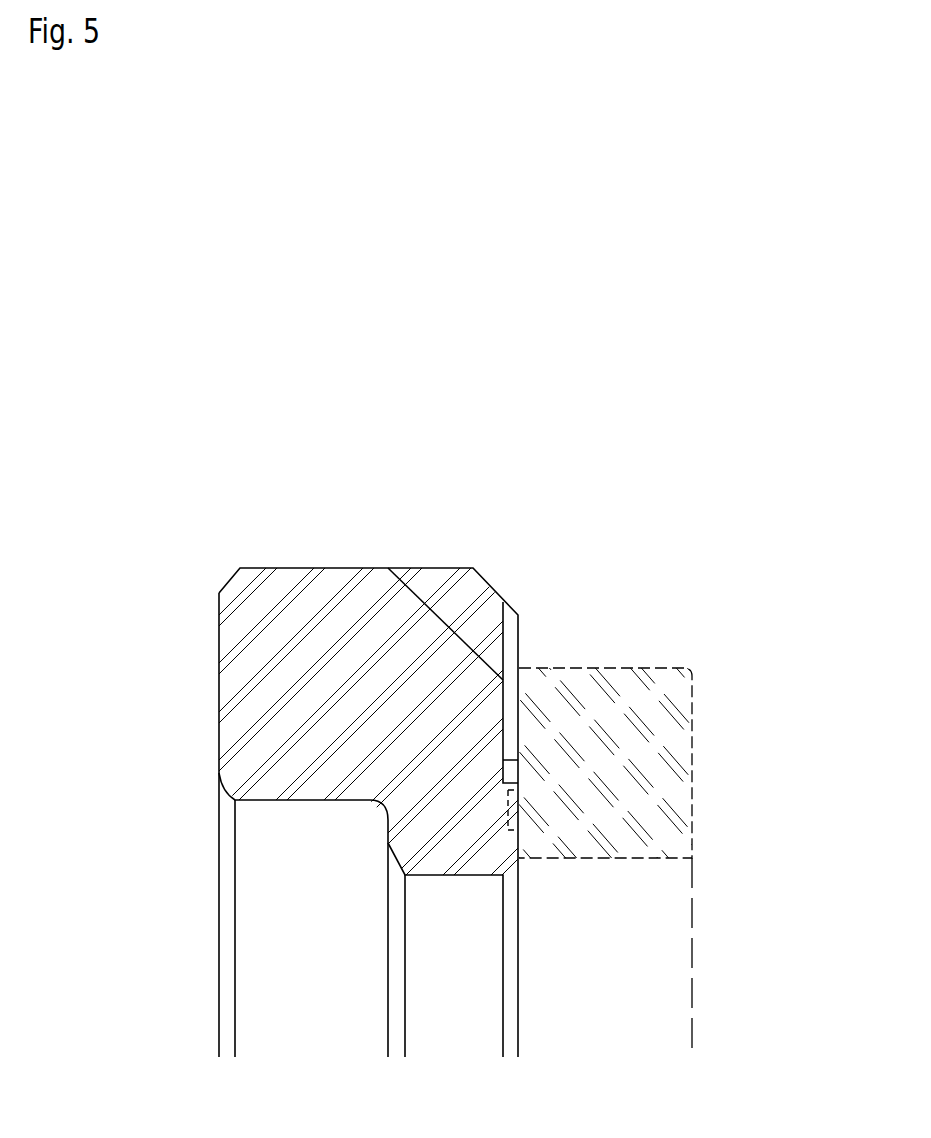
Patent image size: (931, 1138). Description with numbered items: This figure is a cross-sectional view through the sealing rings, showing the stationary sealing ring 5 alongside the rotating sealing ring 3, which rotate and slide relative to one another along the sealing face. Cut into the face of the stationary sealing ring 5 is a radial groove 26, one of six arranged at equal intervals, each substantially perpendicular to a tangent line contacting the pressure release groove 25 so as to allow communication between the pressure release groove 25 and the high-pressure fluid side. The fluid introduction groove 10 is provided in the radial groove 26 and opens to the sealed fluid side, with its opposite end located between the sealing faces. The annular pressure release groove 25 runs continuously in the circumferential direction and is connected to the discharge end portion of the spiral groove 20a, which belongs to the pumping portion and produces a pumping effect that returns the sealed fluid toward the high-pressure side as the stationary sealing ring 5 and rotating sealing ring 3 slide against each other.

The stationary sealing ring 5 is at (322, 568).
The fluid introduction groove 10 is at (455, 605).
The radial groove 26 is at (518, 660).
The pressure release groove 25 is at (520, 765).
The rotating sealing ring 3 is at (693, 722).
The spiral groove 20a is at (520, 807).